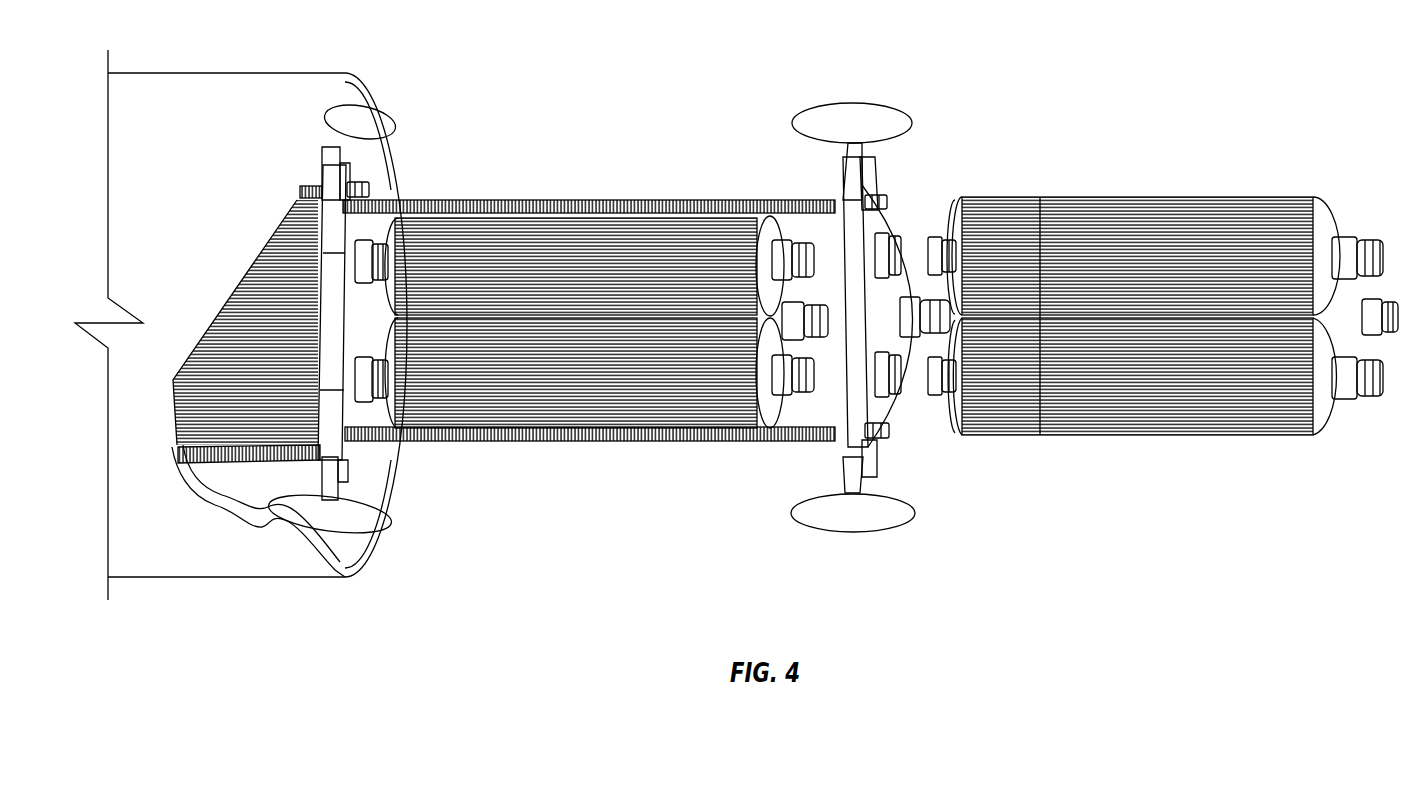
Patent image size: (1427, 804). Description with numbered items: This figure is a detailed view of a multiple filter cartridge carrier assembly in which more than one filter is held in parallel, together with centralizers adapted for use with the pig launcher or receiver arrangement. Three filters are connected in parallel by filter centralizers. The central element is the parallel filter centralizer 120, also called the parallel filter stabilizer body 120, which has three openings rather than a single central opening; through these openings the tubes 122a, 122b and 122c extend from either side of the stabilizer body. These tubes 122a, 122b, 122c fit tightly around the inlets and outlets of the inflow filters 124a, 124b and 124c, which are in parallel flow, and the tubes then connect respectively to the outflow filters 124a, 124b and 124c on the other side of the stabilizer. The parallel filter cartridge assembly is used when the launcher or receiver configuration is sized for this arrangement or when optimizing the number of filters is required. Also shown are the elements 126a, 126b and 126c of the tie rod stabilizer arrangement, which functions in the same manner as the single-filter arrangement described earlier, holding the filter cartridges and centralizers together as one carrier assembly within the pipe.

The parallel filter centralizer 120 is at (883, 220).
The tube 122a is at (887, 250).
The tube 122b is at (910, 353).
The tube 122c is at (903, 338).
The inflow filter 124a is at (1296, 197).
The inflow filter 124b is at (1372, 284).
The inflow filter 124c is at (1180, 433).
The filter cartridge 126a is at (450, 237).
The filter cartridge 126b is at (823, 201).
The filter cartridge 126c is at (452, 395).